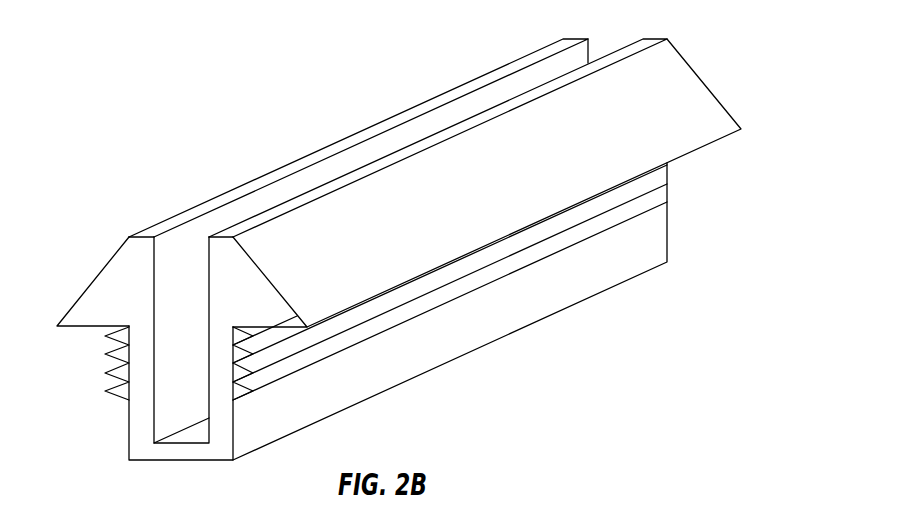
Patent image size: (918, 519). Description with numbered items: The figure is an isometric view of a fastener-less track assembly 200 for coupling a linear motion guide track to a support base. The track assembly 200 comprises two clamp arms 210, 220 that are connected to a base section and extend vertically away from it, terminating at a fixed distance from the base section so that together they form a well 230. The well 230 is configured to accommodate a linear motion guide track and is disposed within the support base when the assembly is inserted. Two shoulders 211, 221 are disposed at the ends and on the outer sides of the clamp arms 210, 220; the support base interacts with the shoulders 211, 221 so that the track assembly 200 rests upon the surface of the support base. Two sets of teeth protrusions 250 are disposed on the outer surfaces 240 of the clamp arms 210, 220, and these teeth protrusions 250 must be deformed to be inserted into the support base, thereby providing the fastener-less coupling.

The fastener-less track assembly 200 is at (134, 80).
The clamp arm 210 is at (151, 234).
The shoulder 211 is at (138, 316).
The clamp arm 220 is at (228, 234).
The shoulder 221 is at (265, 316).
The well 230 is at (200, 404).
The outer surface 240 is at (129, 425).
The teeth protrusions 250 is at (100, 405).